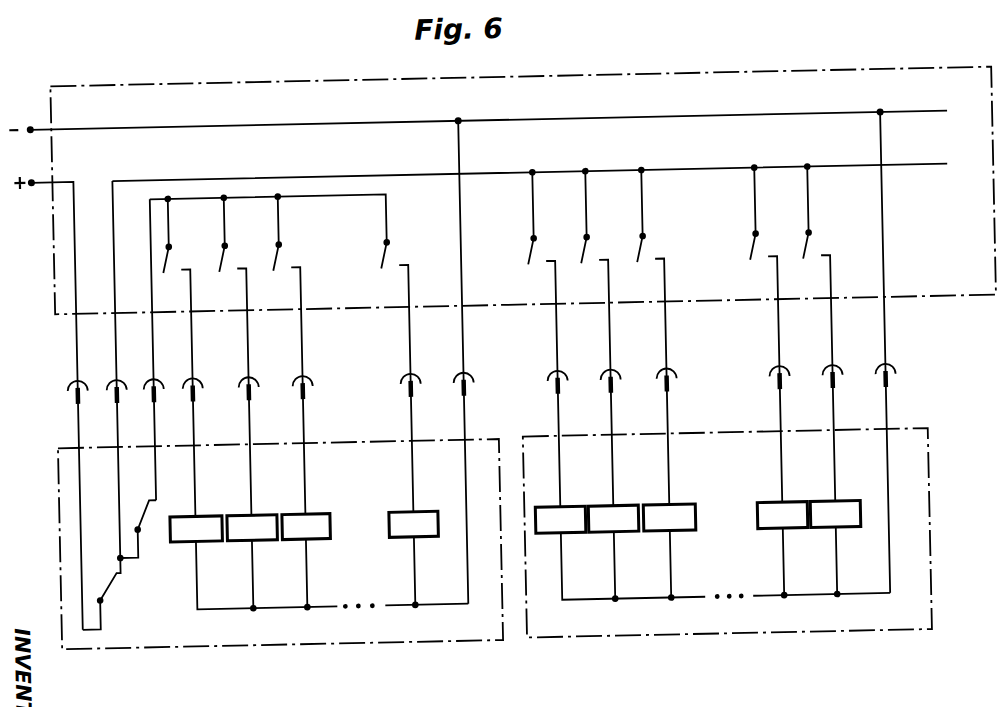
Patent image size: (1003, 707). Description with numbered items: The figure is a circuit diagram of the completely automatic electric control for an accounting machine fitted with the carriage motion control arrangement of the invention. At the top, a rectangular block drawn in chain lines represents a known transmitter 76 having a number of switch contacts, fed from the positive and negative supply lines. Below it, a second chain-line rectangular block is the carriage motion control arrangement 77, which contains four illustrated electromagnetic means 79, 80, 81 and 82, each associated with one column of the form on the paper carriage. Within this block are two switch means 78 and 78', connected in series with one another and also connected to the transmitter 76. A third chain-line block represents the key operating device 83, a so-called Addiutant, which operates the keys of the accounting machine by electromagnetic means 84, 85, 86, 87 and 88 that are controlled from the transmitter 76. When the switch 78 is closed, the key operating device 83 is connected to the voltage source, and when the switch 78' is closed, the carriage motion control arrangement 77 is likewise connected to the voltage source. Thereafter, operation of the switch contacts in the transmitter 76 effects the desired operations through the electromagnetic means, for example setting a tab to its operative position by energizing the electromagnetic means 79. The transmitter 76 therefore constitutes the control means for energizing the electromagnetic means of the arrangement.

The transmitter 76 is at (964, 305).
The carriage motion control arrangement 77 is at (447, 631).
The switch means 78 is at (72, 594).
The switch means 78' is at (90, 531).
The electromagnetic means 79 is at (200, 510).
The electromagnetic means 80 is at (260, 510).
The electromagnetic means 81 is at (305, 510).
The electromagnetic means 82 is at (415, 510).
The key operating device 83 is at (902, 627).
The electromagnetic means 84 is at (569, 508).
The electromagnetic means 85 is at (624, 508).
The electromagnetic means 86 is at (679, 508).
The electromagnetic means 87 is at (790, 508).
The electromagnetic means 88 is at (844, 500).